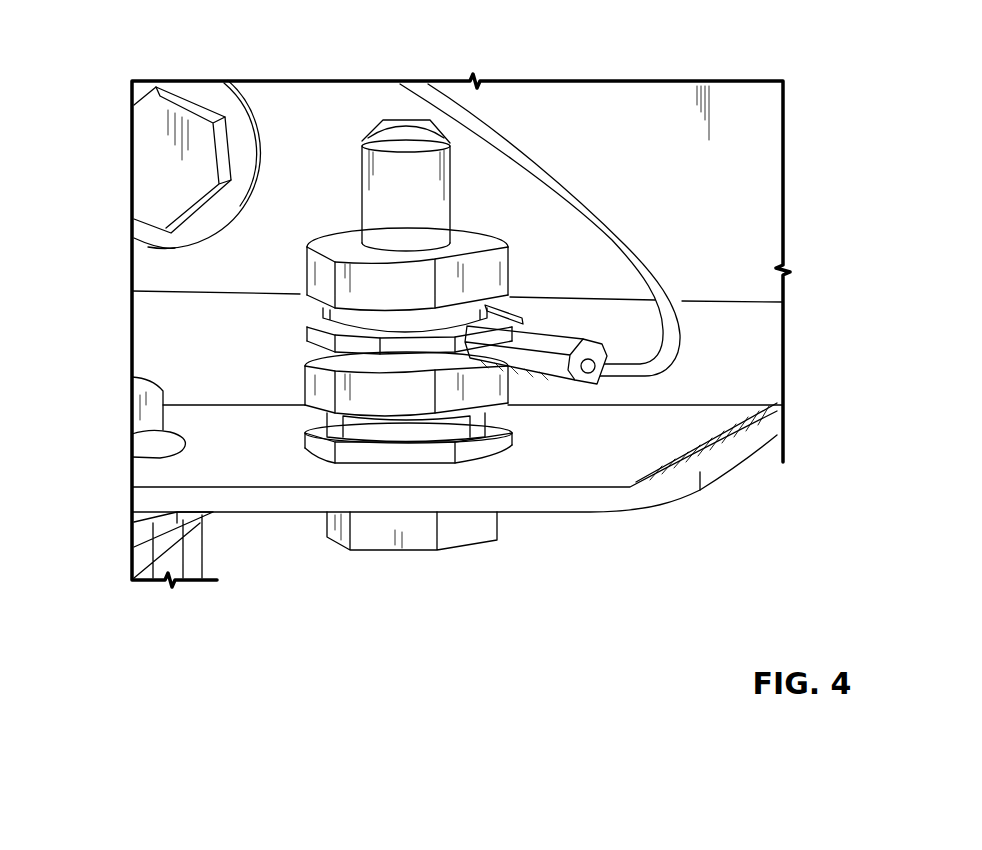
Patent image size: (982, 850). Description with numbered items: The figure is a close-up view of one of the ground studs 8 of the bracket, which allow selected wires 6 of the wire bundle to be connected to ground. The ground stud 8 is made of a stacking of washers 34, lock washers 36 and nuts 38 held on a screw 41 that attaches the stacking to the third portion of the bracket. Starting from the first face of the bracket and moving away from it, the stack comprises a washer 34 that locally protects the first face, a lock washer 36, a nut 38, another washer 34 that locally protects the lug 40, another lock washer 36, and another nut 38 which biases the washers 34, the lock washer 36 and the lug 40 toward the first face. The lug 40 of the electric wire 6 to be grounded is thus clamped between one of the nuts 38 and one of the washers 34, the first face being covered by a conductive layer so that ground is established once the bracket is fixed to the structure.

The ground stud 8 is at (592, 128).
The wire 6 is at (593, 216).
The screw 41 is at (408, 203).
The nut 38 is at (320, 275).
The lock washer 36 is at (323, 315).
The washer 34 is at (318, 335).
The lug 40 is at (551, 372).